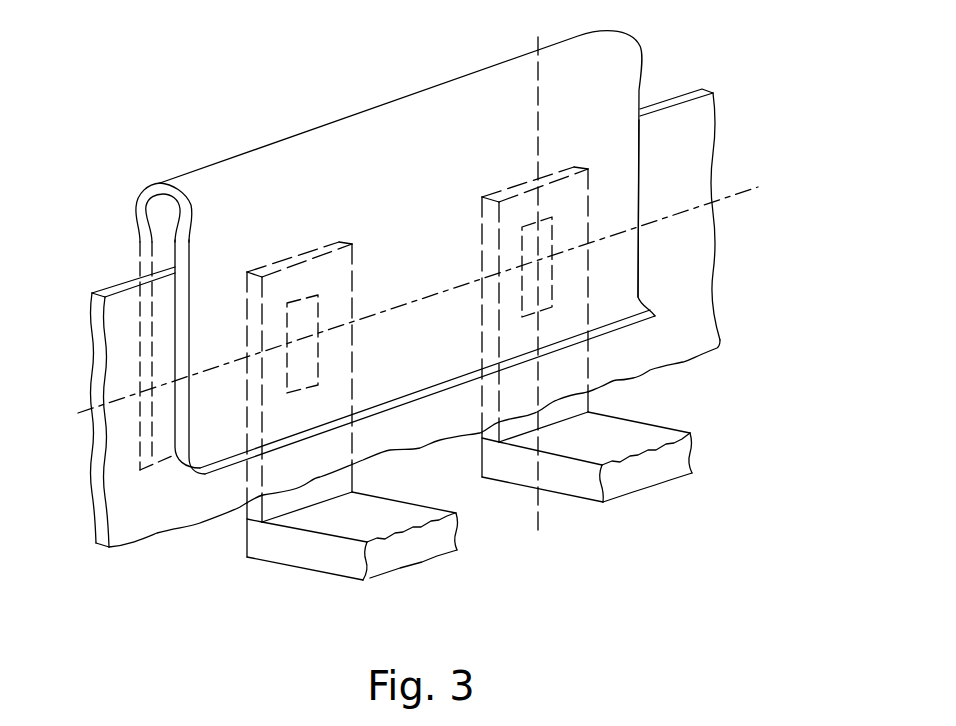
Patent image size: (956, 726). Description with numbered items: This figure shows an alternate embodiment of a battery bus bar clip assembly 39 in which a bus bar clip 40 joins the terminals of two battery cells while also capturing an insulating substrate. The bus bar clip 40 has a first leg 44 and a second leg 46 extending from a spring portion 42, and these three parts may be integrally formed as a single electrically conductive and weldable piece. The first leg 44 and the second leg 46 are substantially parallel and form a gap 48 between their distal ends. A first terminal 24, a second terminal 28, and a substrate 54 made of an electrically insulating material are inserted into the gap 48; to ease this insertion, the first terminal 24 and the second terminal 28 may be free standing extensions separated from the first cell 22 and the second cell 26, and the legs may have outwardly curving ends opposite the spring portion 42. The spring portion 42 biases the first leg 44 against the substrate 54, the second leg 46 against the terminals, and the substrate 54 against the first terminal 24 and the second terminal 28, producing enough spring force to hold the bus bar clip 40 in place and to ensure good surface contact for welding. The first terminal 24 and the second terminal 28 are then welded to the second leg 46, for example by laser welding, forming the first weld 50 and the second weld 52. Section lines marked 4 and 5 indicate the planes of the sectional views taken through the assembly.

The first cell 22 is at (393, 525).
The first terminal 24 is at (303, 498).
The second cell 26 is at (648, 433).
The second terminal 28 is at (567, 410).
The battery bus bar clip assembly 39 is at (170, 137).
The bus bar clip 40 is at (626, 182).
The spring portion 42 is at (323, 150).
The first leg 44 is at (622, 255).
The second leg 46 is at (160, 253).
The gap 48 is at (172, 457).
The first weld 50 is at (298, 353).
The second weld 52 is at (547, 278).
The substrate 54 is at (168, 512).
The section line 4- 4 is at (580, 23).
The section line 5- 5 is at (78, 413).